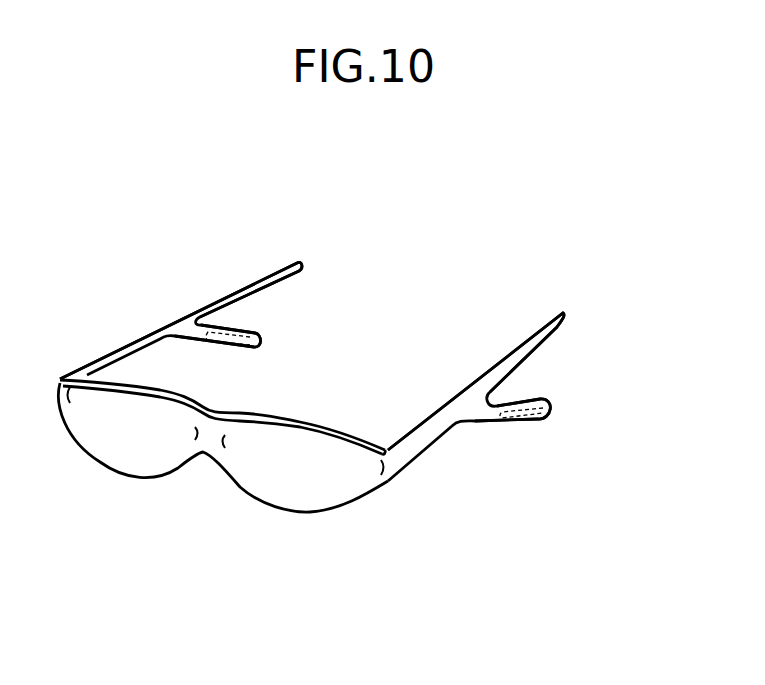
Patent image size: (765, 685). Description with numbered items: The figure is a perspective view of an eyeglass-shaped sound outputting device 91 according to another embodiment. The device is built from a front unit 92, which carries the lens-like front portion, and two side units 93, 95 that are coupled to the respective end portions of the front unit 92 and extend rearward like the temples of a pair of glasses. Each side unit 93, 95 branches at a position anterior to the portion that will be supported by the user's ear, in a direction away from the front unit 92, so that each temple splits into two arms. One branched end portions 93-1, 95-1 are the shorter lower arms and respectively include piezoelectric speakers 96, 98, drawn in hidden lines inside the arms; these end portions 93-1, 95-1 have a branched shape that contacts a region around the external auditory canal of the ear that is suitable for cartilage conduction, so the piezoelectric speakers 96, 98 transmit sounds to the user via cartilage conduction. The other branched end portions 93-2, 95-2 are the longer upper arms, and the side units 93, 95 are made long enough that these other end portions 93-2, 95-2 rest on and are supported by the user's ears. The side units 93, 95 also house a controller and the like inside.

The sound outputting device 91 is at (152, 183).
The front unit 92 is at (275, 492).
The side unit 93 is at (520, 365).
The one branched end portion 93-1 is at (552, 405).
The other branched end portion 93-2 is at (539, 341).
The side unit 95 is at (210, 289).
The one branched end portion 95-1 is at (259, 336).
The other branched end portion 95-2 is at (229, 291).
The piezoelectric speaker 96 is at (518, 408).
The piezoelectric speaker 98 is at (224, 330).